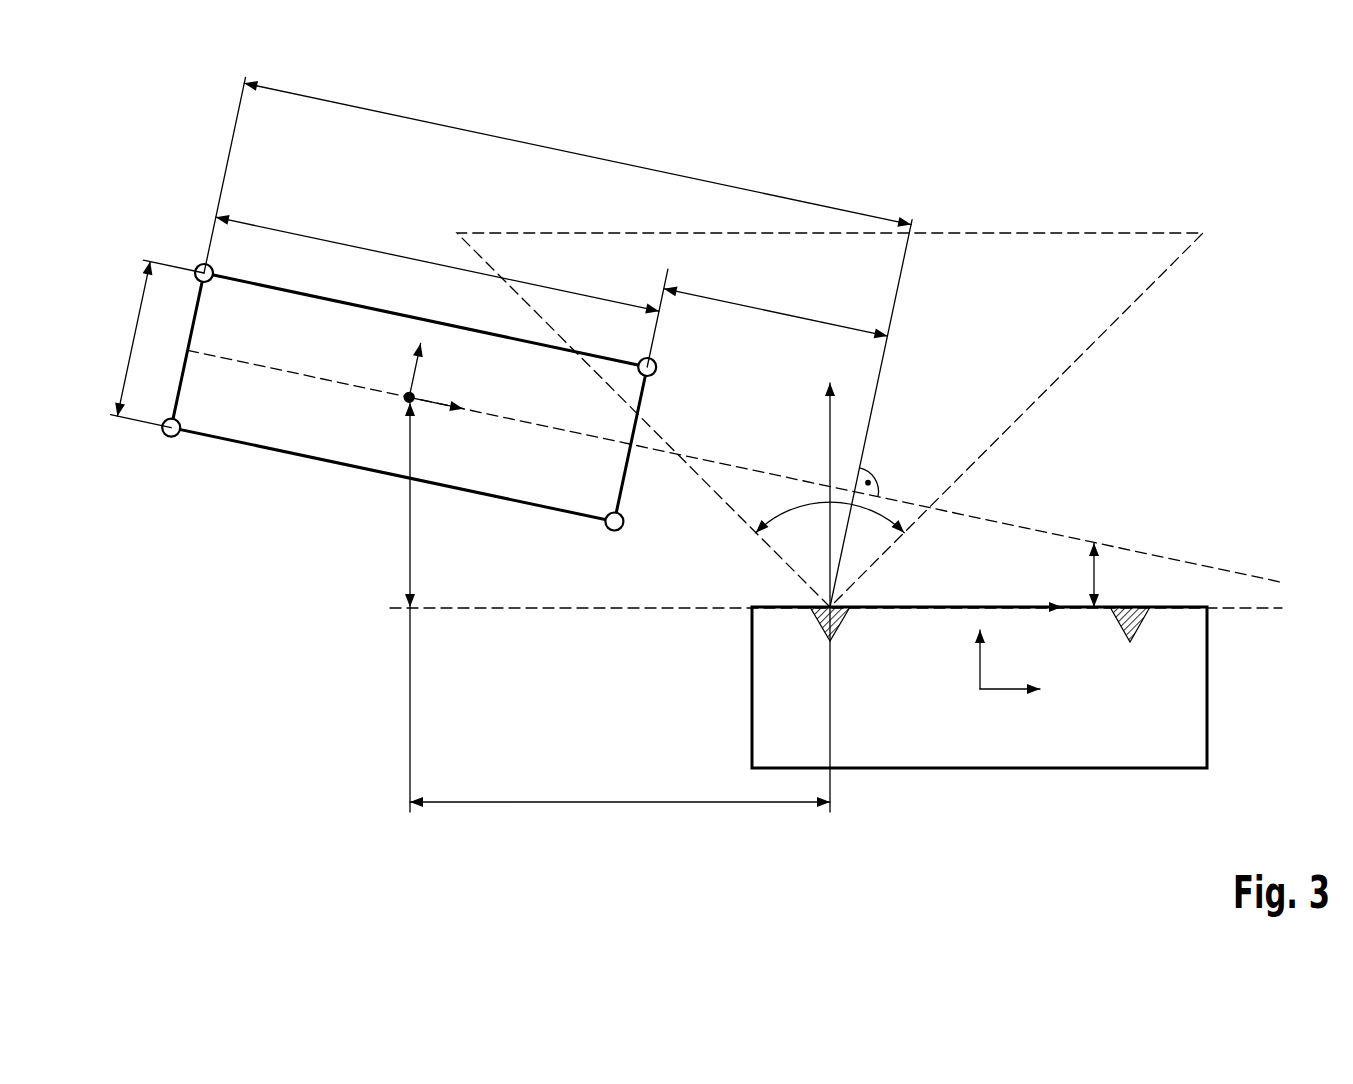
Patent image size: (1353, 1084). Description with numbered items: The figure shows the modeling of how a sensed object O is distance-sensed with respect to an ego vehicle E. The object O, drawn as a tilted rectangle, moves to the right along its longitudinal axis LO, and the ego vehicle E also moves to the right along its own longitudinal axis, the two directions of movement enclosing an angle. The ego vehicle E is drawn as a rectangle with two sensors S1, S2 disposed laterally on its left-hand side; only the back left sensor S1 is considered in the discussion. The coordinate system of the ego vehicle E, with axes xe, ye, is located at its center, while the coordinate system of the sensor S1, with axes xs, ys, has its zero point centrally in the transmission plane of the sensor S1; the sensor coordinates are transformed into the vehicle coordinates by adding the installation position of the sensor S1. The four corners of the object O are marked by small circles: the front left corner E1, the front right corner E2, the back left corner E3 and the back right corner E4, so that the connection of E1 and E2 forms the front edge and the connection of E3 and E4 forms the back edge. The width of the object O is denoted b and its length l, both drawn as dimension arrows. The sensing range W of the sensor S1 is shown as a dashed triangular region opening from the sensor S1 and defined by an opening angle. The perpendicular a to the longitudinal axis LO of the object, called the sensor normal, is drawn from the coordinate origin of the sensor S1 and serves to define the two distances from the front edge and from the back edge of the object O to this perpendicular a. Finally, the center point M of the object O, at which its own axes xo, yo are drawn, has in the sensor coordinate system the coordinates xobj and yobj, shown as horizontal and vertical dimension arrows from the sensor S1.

The object O is at (322, 465).
The front left corner E1 is at (657, 366).
The front right corner E2 is at (618, 531).
The back left corner E3 is at (200, 264).
The back right corner E4 is at (175, 437).
The center point M is at (400, 398).
The longitudinal axis LO is at (1172, 555).
The length l is at (412, 258).
The width b is at (140, 342).
The perpendicular a is at (903, 283).
The sensing range W is at (1048, 232).
The ego vehicle E is at (978, 770).
The back left sensor S1 is at (815, 622).
The second sensor S2 is at (1142, 630).
The x coordinate of the center point xobj is at (617, 805).
The y coordinate of the center point yobj is at (387, 607).
The sensor x axis xs is at (948, 590).
The sensor y axis ys is at (817, 590).
The ego vehicle x axis xe is at (1014, 708).
The ego vehicle y axis ye is at (968, 650).
The object x axis xo is at (440, 423).
The object y axis yo is at (404, 361).